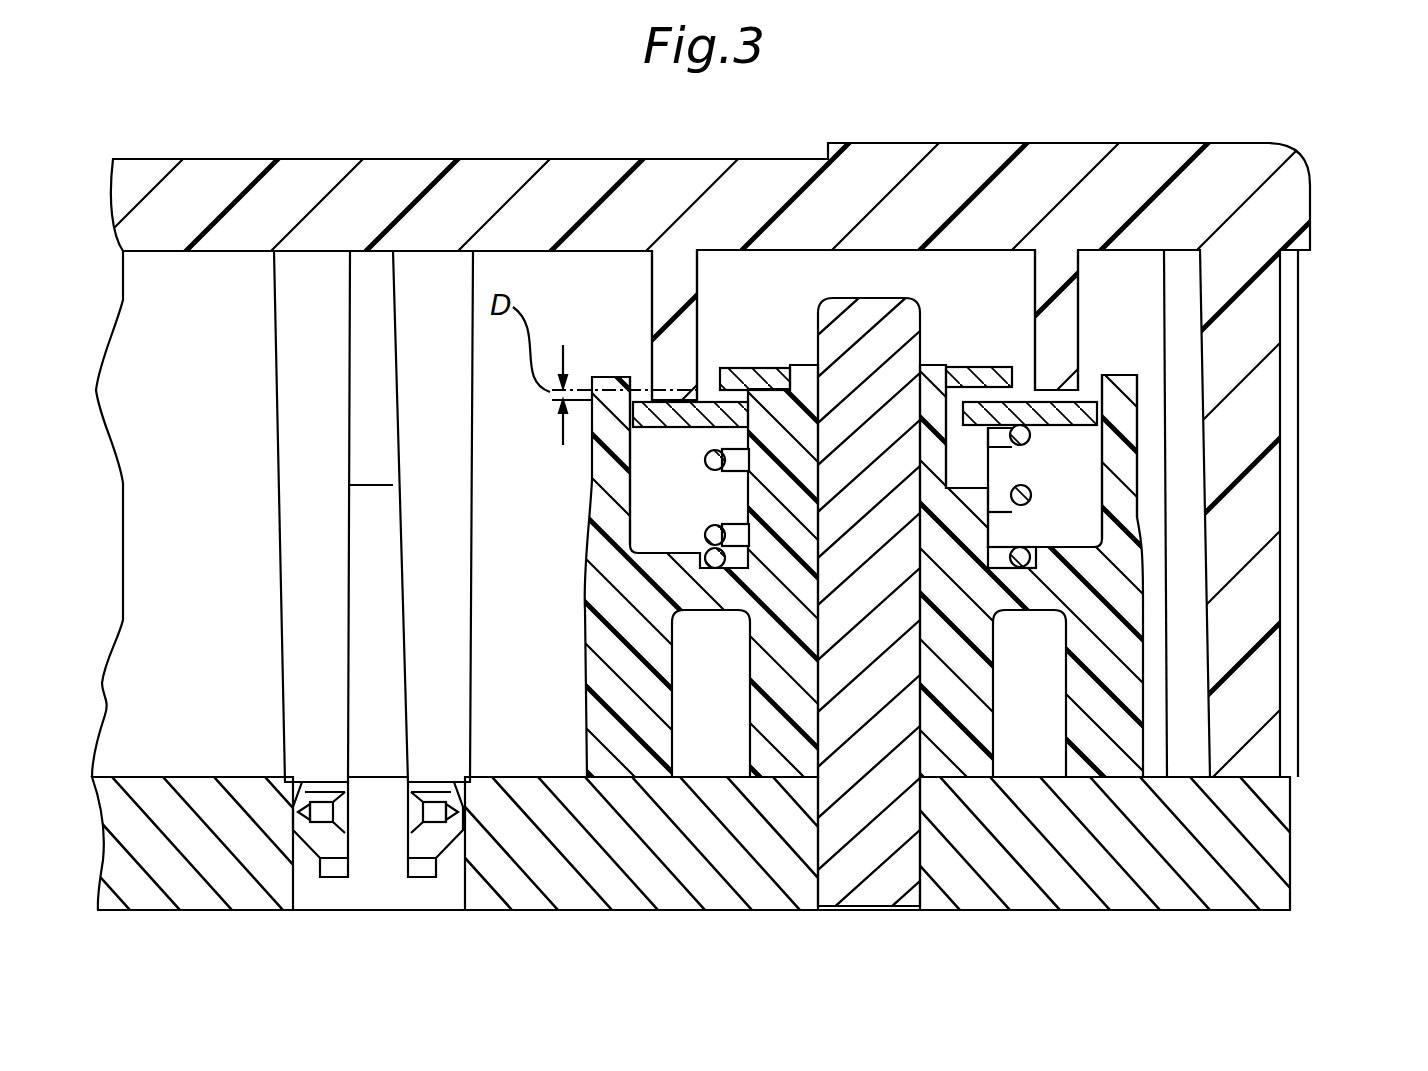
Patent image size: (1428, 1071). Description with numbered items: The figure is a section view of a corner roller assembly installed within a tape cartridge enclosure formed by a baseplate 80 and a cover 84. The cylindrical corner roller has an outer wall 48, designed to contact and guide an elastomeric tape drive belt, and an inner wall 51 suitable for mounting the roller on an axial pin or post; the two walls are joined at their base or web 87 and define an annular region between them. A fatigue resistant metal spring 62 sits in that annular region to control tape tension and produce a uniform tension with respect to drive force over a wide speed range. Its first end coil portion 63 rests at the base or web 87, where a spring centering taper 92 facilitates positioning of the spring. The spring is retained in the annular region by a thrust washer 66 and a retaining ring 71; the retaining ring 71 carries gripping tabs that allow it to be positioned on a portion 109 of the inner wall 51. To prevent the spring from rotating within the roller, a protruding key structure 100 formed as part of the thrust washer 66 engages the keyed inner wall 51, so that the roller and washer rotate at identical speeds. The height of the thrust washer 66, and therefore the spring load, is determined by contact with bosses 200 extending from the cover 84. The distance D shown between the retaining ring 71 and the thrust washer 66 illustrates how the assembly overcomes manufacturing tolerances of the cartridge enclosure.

The cover 84 is at (1135, 168).
The baseplate 80 is at (1240, 858).
The bosses 200 is at (1043, 293).
The protruding key structure 100 is at (1050, 395).
The portion of inner wall 109 is at (778, 365).
The retaining ring 71 is at (972, 367).
The thrust washer 66 is at (1120, 412).
The outer wall 48 is at (593, 465).
The inner wall 51 is at (770, 483).
The fatigue resistant metal spring 62 is at (1013, 503).
The first end coil portion 63 is at (1110, 632).
The base or web 87 is at (703, 553).
The spring centering taper 92 is at (710, 568).